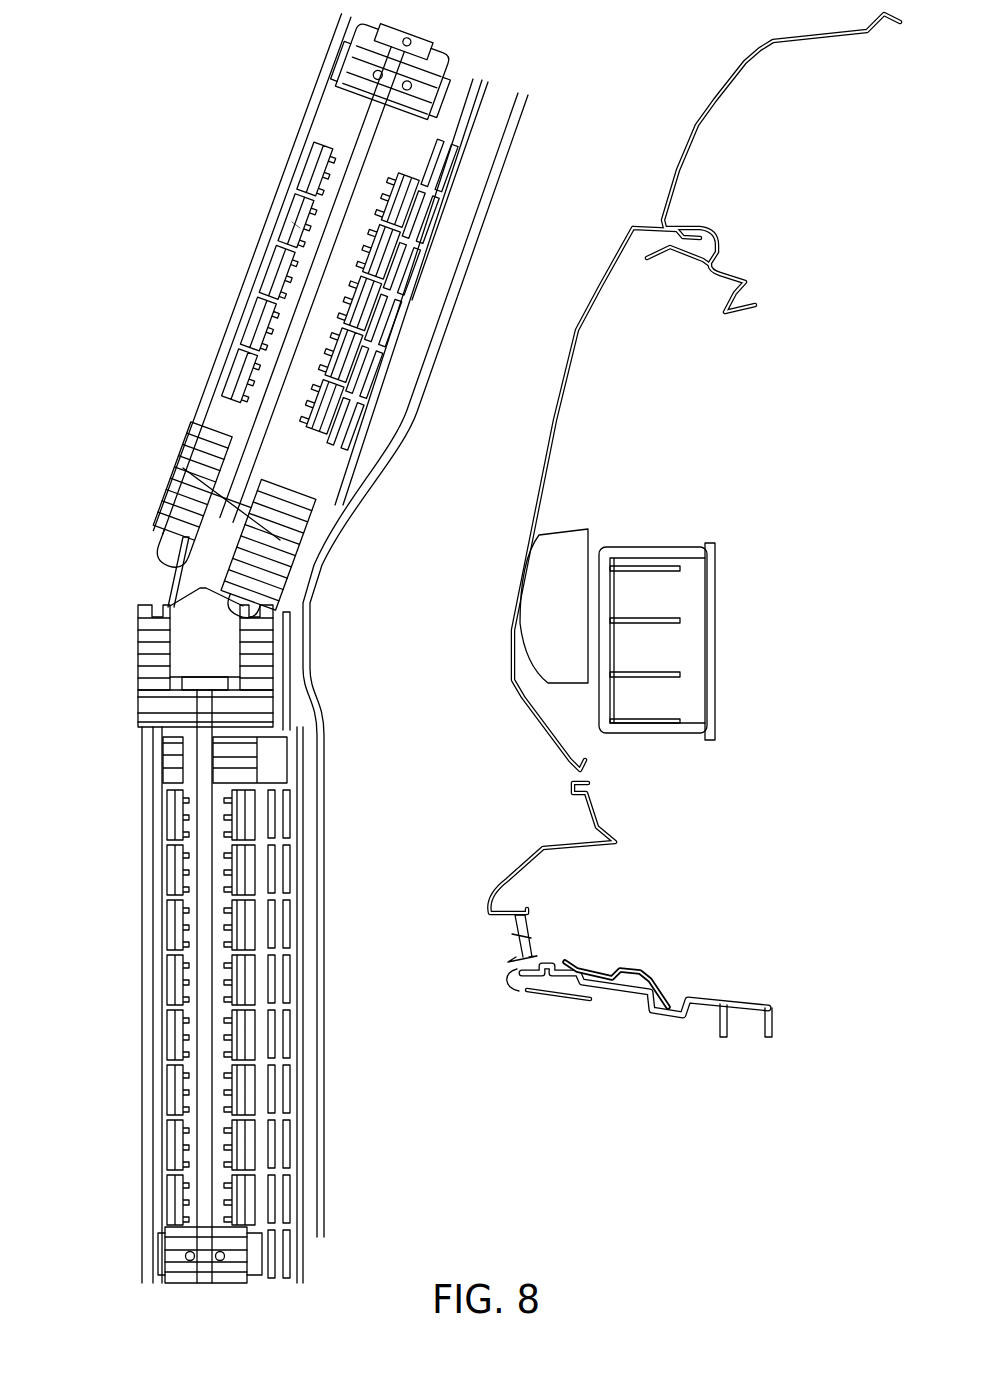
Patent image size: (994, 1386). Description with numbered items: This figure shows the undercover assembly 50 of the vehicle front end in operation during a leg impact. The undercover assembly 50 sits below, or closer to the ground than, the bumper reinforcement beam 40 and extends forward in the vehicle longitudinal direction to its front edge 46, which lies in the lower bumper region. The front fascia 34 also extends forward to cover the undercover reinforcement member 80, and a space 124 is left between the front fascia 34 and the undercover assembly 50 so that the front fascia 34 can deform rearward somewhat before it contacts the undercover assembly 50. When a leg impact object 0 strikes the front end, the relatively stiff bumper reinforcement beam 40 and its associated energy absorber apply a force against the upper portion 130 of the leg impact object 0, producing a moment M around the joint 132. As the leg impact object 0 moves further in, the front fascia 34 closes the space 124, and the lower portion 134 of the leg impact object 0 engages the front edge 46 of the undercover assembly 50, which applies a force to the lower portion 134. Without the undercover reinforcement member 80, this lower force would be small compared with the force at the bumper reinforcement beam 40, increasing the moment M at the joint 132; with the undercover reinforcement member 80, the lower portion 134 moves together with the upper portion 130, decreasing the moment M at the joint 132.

The upper portion 130 is at (270, 129).
The lower portion 134 is at (127, 1033).
The leg impact object 0 is at (297, 234).
The moment M is at (114, 484).
The joint 132 is at (259, 599).
The space 124 is at (497, 959).
The bumper reinforcement beam 40 is at (689, 630).
The front fascia 34 is at (503, 973).
The front edge 46 is at (520, 990).
The undercover assembly 50 is at (647, 1023).
The undercover reinforcement member 80 is at (669, 968).